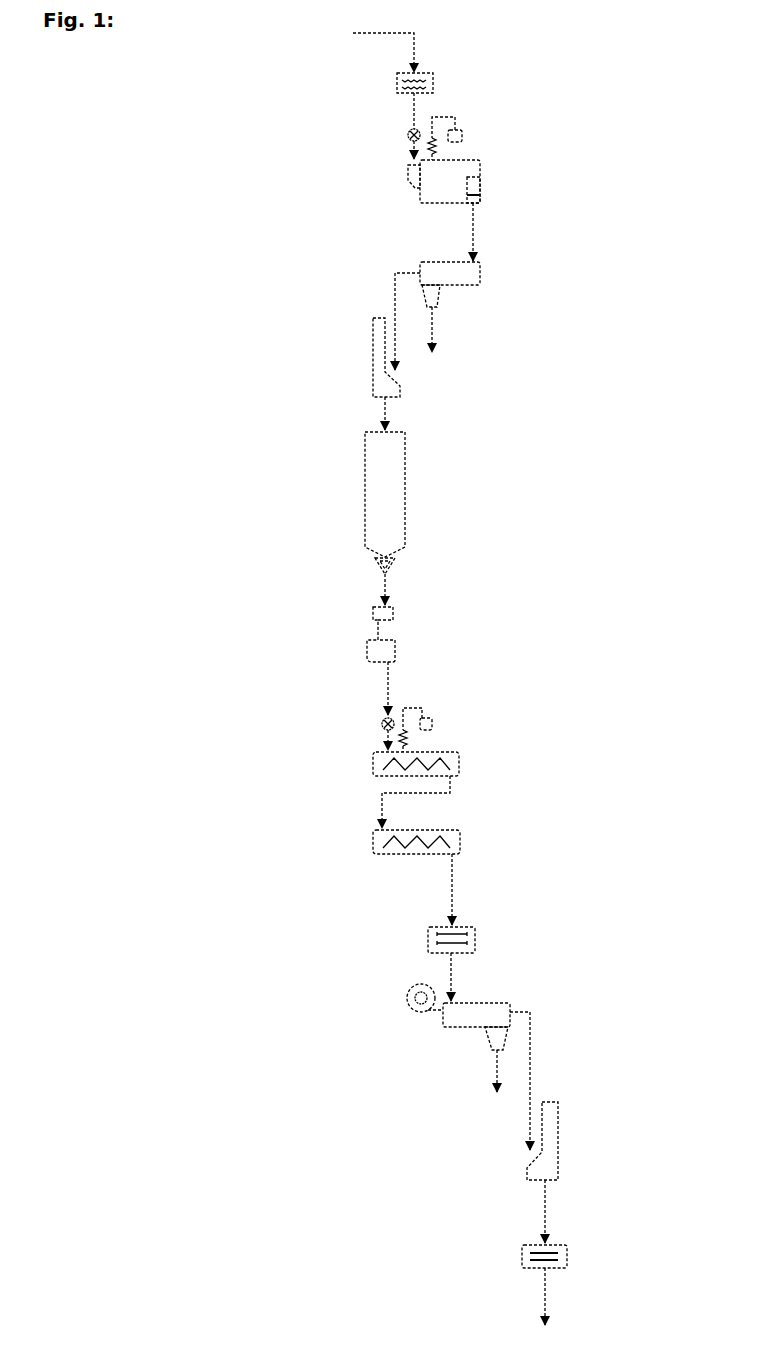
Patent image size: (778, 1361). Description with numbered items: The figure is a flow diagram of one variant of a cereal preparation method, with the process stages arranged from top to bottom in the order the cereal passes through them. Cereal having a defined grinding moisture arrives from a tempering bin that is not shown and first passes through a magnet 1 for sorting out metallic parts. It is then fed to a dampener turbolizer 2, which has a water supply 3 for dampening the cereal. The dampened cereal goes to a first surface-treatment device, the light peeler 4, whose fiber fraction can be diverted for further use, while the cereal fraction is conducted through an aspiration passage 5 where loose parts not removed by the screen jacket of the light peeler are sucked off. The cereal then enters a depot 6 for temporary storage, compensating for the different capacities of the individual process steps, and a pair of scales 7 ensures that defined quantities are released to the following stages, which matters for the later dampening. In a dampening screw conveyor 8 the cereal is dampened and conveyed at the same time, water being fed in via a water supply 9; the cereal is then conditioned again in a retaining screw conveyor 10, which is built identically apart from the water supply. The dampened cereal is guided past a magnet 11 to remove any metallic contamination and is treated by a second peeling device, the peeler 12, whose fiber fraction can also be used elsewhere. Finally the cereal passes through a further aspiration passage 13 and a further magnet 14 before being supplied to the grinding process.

The magnet 1 is at (434, 78).
The dampener turbolizer 2 is at (481, 168).
The water supply 3 is at (463, 135).
The light peeler 4 is at (481, 272).
The aspiration passage 5 is at (376, 360).
The depot 6 is at (365, 505).
The pair of scales 7 is at (378, 630).
The dampening screw conveyor 8 is at (460, 763).
The water supply 9 is at (433, 722).
The retaining screw conveyor 10 is at (373, 845).
The magnet 11 is at (477, 940).
The peeler 12 is at (511, 1005).
The further aspiration passage 13 is at (559, 1145).
The further magnet 14 is at (568, 1257).